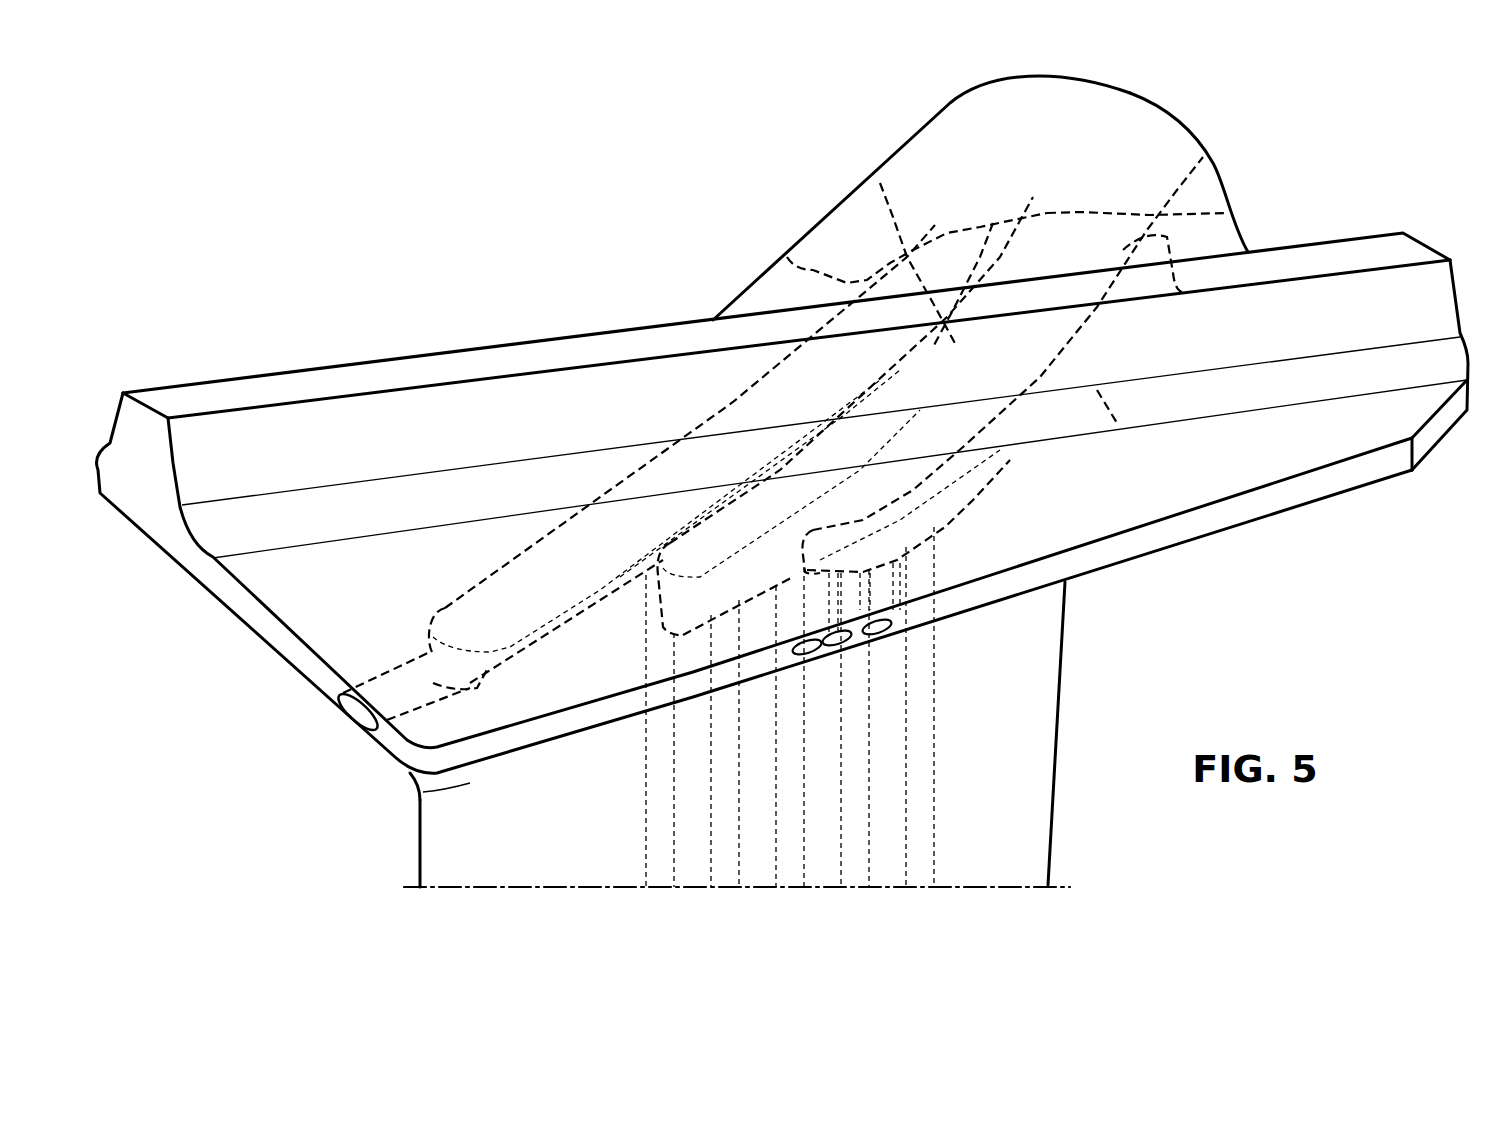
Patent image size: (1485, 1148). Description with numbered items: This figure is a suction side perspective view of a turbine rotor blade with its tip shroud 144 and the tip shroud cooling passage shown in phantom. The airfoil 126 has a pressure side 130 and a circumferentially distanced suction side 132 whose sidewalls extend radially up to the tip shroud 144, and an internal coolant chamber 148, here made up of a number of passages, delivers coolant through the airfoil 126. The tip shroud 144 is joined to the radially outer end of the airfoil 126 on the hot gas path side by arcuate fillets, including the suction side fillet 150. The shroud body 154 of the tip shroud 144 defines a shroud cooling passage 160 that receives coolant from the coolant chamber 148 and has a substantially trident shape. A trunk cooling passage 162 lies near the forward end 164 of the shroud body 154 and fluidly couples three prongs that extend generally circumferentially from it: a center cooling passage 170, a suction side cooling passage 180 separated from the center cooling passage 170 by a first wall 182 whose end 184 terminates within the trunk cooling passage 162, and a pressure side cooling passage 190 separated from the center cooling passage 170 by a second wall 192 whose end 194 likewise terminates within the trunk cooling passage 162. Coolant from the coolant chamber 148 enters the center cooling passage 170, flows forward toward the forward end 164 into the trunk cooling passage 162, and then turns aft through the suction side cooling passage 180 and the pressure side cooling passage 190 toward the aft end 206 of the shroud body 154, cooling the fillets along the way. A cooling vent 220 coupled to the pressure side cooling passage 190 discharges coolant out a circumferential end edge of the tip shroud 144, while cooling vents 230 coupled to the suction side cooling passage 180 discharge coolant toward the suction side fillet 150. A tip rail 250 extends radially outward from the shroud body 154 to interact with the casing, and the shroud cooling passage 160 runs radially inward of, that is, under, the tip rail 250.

The airfoil 126 is at (1053, 800).
The pressure side 130 is at (533, 832).
The suction side 132 is at (1030, 723).
The tip shroud 144 is at (1240, 157).
The coolant chamber 148 is at (918, 830).
The suction side fillet 150 is at (420, 792).
The shroud body 154 is at (1112, 122).
The shroud cooling passage 160 is at (733, 402).
The trunk cooling passage 162 is at (1227, 213).
The forward end 164 is at (1010, 90).
The center cooling passage 170 is at (787, 257).
The suction side cooling passage 180 is at (1073, 372).
The first wall 182 is at (1070, 377).
The end 184 is at (1203, 157).
The pressure side cooling passage 190 is at (688, 470).
The second wall 192 is at (880, 183).
The end 194 is at (993, 223).
The aft end 206 is at (300, 595).
The cooling vent 220 is at (357, 712).
The cooling vent 230 is at (820, 657).
The tip rail 250 is at (448, 410).